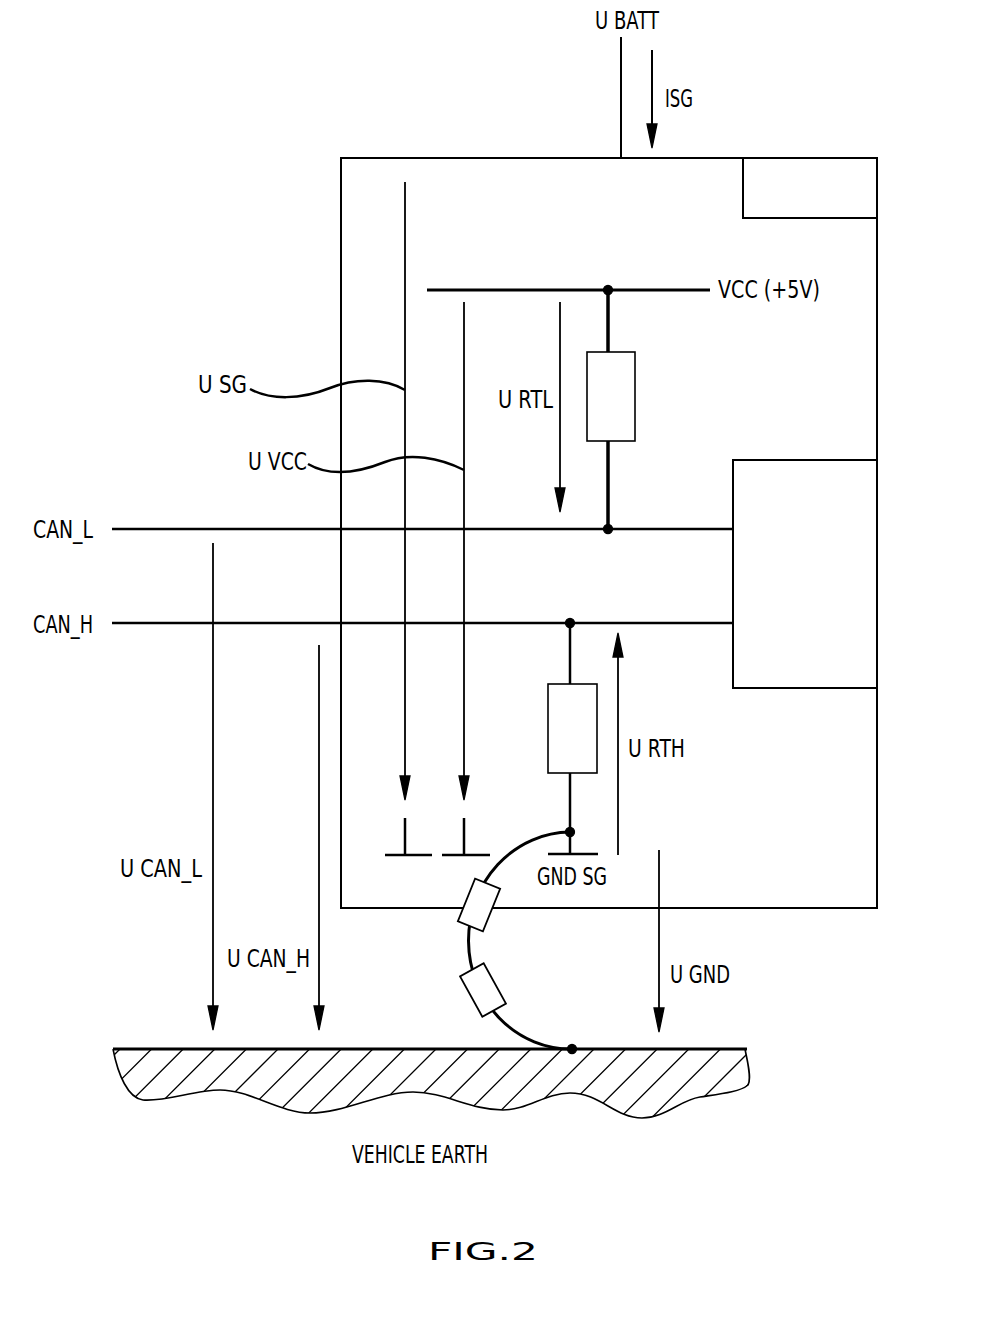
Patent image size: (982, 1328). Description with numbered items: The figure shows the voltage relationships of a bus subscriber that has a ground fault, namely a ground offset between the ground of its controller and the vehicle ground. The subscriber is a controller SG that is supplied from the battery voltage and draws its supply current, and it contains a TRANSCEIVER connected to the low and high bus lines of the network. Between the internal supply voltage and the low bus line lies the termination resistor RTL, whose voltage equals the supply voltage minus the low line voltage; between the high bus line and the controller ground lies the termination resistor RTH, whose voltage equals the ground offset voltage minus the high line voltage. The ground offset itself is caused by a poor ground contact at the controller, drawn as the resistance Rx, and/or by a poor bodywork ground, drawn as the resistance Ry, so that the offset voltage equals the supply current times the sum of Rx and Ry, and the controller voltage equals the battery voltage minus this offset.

The controller SG is at (609, 533).
The transceiver TRANSCEIVER is at (805, 574).
The termination resistor for CAN_L RTL is at (631, 409).
The termination resistor for CAN_H RTH is at (553, 738).
The ground contact resistance at the controller Rx is at (488, 911).
The bodywork ground resistance Ry is at (492, 989).